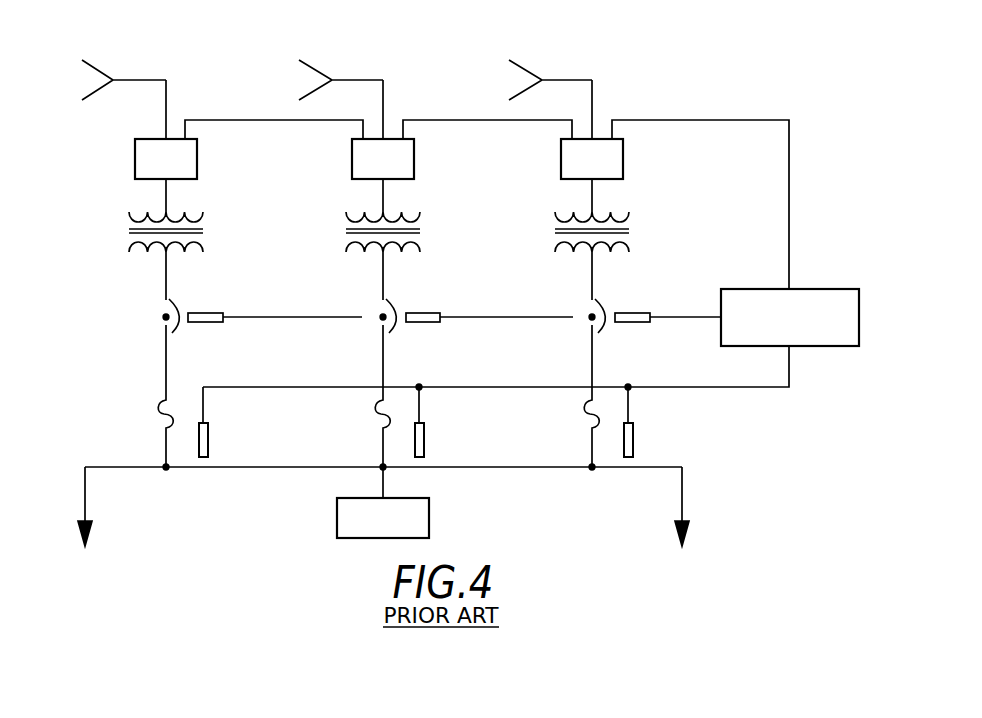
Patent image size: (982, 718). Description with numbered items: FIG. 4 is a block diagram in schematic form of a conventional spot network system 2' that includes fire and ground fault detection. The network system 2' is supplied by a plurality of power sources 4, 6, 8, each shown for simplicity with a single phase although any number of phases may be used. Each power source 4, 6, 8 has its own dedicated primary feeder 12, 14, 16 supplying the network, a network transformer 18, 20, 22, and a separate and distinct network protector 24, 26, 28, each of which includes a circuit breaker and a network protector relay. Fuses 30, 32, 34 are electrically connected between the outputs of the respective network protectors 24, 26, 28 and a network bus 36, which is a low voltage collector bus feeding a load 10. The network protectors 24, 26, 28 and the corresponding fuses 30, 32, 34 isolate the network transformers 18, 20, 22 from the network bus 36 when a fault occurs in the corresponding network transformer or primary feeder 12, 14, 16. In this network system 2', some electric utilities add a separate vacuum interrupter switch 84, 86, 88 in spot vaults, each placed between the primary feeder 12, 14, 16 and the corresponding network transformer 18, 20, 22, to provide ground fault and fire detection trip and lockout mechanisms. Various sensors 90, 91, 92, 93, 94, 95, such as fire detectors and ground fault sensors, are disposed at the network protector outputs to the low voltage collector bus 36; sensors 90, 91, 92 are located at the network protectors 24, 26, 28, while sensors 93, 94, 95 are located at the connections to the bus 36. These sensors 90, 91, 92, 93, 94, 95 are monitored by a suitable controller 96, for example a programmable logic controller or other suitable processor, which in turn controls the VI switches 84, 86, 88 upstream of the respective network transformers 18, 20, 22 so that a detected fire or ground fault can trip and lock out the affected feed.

The network system 2' is at (487, 151).
The power source 4 is at (138, 80).
The power source 6 is at (355, 80).
The power source 8 is at (565, 80).
The load 10 is at (429, 518).
The primary feeder 12 is at (167, 92).
The primary feeder 14 is at (384, 92).
The primary feeder 16 is at (593, 92).
The network transformer 18 is at (148, 245).
The network transformer 20 is at (365, 245).
The network transformer 22 is at (574, 245).
The network protector 24 is at (172, 333).
The network protector 26 is at (389, 333).
The network protector 28 is at (598, 333).
The fuse 30 is at (158, 405).
The fuse 32 is at (375, 412).
The fuse 34 is at (584, 412).
The network bus 36 is at (512, 470).
The vacuum interrupter switch 84 is at (197, 157).
The vacuum interrupter switch 86 is at (414, 157).
The vacuum interrupter switch 88 is at (623, 157).
The sensor 90 is at (205, 312).
The sensor 91 is at (422, 312).
The sensor 92 is at (631, 312).
The sensor 93 is at (208, 440).
The sensor 94 is at (424, 440).
The sensor 95 is at (633, 440).
The controller 96 is at (823, 289).